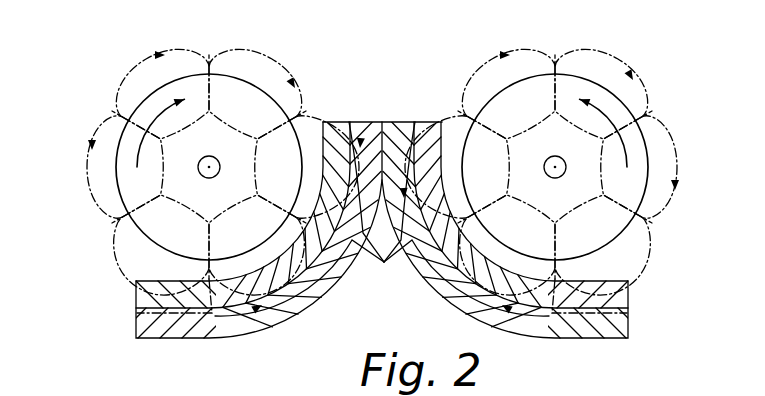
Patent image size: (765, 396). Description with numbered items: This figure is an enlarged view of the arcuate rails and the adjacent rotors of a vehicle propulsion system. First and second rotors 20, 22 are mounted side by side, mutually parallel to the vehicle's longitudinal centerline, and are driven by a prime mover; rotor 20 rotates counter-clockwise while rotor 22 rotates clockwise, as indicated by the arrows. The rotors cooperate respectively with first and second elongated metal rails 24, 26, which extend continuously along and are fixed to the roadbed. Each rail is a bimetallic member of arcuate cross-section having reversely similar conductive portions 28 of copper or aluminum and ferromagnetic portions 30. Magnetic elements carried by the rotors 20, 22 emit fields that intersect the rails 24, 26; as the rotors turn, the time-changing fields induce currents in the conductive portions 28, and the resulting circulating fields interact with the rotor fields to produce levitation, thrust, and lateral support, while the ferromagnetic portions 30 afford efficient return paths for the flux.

The first rotor 20 is at (650, 156).
The second rotor 22 is at (248, 84).
The first elongated metal rail 24 is at (414, 122).
The second elongated metal rail 26 is at (349, 122).
The conductive portions 28 is at (336, 153).
The ferromagnetic portions 30 is at (382, 190).